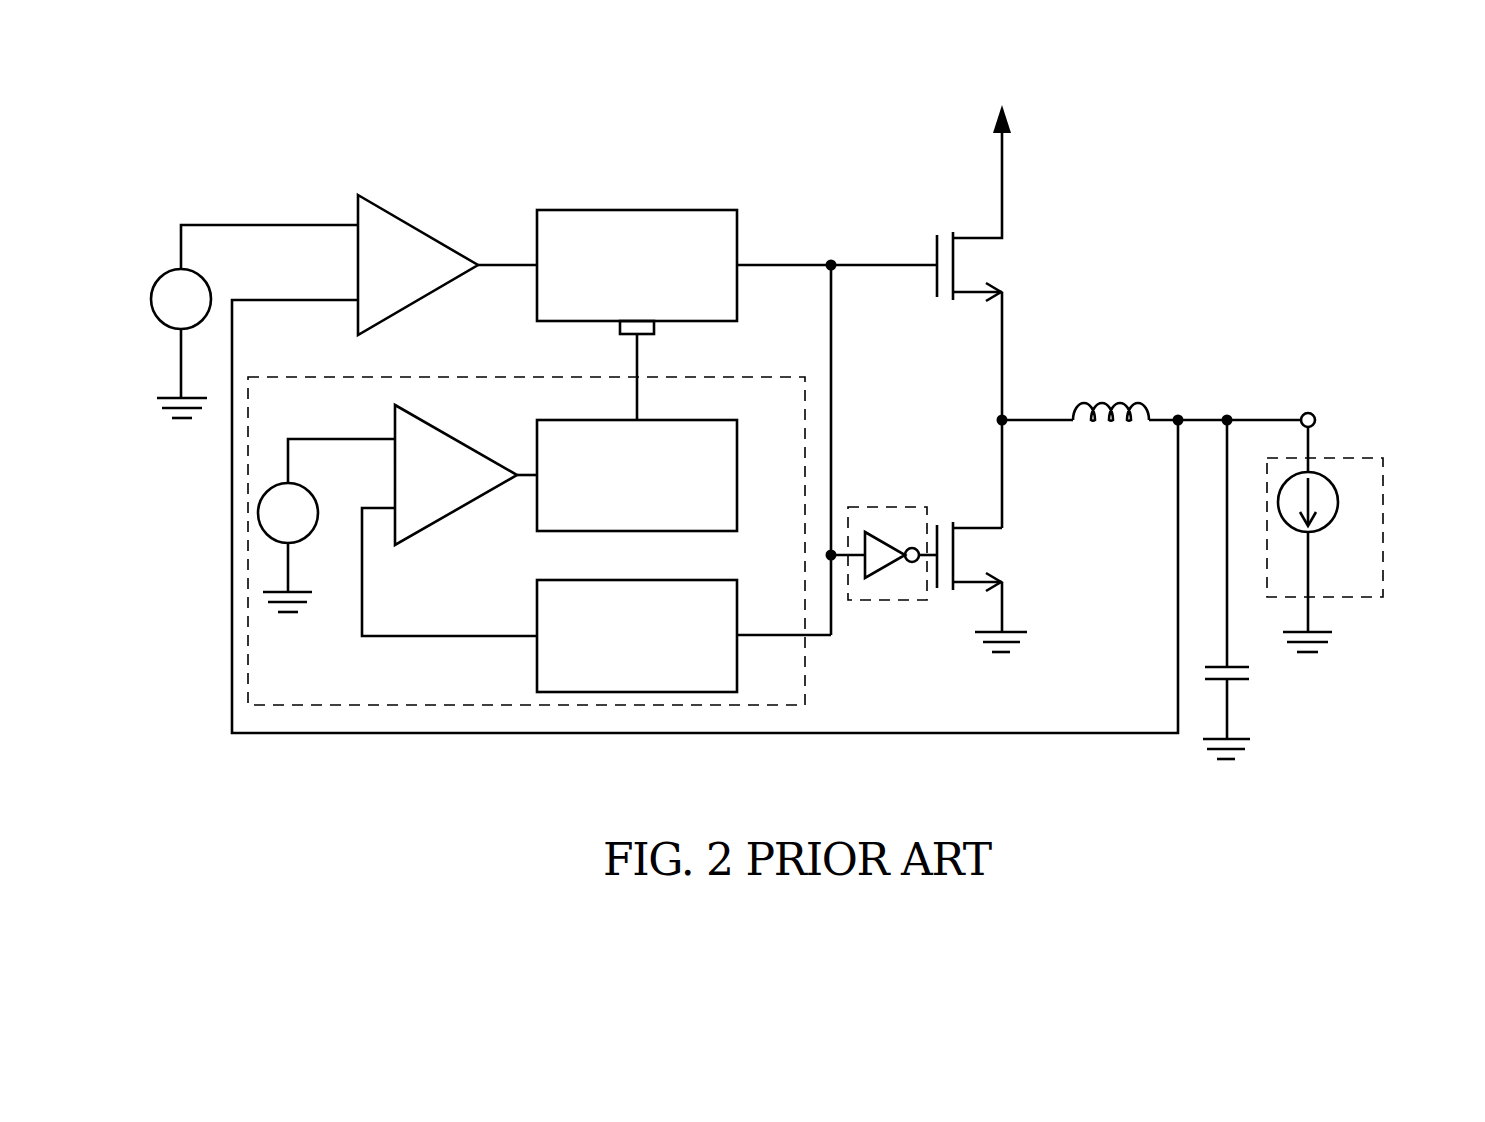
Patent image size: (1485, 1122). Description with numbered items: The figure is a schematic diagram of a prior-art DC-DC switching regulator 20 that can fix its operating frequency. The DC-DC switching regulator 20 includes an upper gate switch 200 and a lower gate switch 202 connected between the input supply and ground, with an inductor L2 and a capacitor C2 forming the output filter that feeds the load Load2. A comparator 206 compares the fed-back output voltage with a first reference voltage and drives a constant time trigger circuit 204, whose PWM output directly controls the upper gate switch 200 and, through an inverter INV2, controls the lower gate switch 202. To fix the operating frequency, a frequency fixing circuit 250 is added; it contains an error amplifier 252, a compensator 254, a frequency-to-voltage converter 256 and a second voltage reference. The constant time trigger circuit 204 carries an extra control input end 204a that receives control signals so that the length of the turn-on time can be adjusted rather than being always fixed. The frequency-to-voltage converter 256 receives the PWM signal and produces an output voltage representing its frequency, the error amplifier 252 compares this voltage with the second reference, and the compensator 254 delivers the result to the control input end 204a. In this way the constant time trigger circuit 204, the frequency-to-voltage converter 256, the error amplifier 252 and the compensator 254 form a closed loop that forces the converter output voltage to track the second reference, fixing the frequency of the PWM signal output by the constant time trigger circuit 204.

The DC-DC switching regulator 20 is at (1200, 198).
The upper gate switch 200 is at (1008, 268).
The lower gate switch 202 is at (1008, 548).
The constant time trigger circuit 204 is at (705, 210).
The control input end 204a is at (645, 330).
The comparator 206 is at (420, 228).
The frequency fixing circuit 250 is at (755, 380).
The error amplifier 252 is at (455, 438).
The compensator 254 is at (707, 420).
The frequency-to-voltage converter 256 is at (707, 580).
The inverter INV2 is at (908, 507).
The inductor L2 is at (1075, 398).
The capacitor C2 is at (1258, 673).
The load Load2 is at (1363, 458).